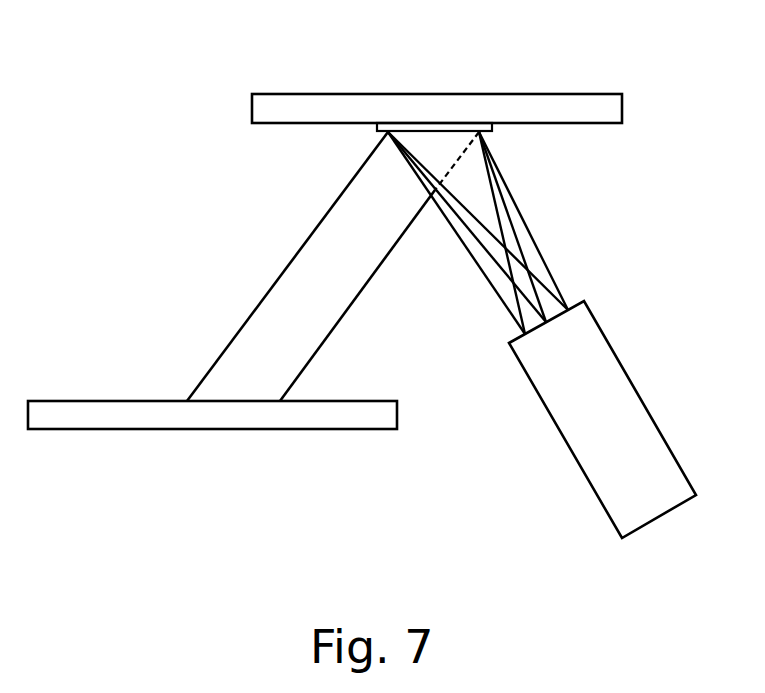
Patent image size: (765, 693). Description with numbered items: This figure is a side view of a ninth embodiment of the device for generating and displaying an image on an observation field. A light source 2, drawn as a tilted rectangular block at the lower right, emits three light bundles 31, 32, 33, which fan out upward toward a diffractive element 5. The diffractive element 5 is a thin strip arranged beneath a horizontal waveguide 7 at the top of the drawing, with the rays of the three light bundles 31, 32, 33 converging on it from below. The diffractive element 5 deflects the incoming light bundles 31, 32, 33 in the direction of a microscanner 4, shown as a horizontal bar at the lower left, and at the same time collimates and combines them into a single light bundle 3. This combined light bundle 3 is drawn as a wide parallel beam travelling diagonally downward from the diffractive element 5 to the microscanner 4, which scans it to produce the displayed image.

The carrier plate / support 7 is at (427, 94).
The diffractive element 5 is at (456, 131).
The light bundle 3 is at (300, 248).
The light bundle 31 is at (518, 302).
The light bundle 32 is at (518, 242).
The light bundle 33 is at (505, 183).
The light source 2 is at (627, 375).
The microscanner 4 is at (168, 429).